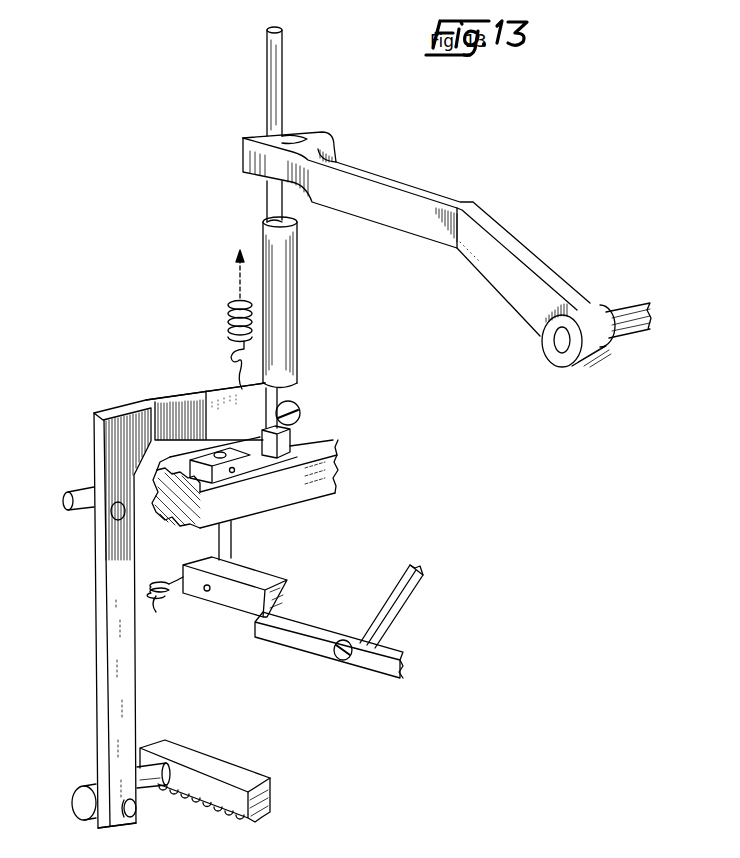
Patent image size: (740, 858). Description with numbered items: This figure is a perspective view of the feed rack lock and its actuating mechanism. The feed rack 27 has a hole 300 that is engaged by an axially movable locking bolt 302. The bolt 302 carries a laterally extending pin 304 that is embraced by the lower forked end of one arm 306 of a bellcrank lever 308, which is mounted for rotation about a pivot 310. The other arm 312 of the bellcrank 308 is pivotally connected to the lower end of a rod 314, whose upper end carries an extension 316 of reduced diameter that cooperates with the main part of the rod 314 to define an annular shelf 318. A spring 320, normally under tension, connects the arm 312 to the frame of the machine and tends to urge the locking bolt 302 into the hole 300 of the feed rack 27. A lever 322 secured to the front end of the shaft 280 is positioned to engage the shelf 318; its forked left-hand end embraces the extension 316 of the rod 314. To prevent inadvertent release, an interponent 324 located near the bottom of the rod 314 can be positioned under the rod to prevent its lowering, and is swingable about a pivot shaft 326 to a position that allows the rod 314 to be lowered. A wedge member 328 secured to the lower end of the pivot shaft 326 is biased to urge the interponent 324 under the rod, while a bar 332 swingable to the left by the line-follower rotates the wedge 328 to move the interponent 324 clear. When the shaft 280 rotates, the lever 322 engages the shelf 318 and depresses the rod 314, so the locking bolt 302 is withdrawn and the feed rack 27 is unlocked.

The feed rack 27 is at (235, 777).
The shaft 280 is at (562, 344).
The hole 300 is at (170, 765).
The locking bolt 302 is at (147, 778).
The laterally extending pin 304 is at (128, 818).
The arm 306 is at (103, 693).
The bellcrank lever 308 is at (93, 411).
The pivot 310 is at (80, 498).
The arm 312 is at (190, 400).
The rod 314 is at (291, 311).
The extension 316 is at (281, 51).
The annular shelf 318 is at (263, 219).
The spring 320 is at (228, 308).
The lever 322 is at (415, 188).
The interponent 324 is at (290, 440).
The pivot shaft 326 is at (230, 540).
The wedge member 328 is at (265, 580).
The bar 332 is at (300, 637).